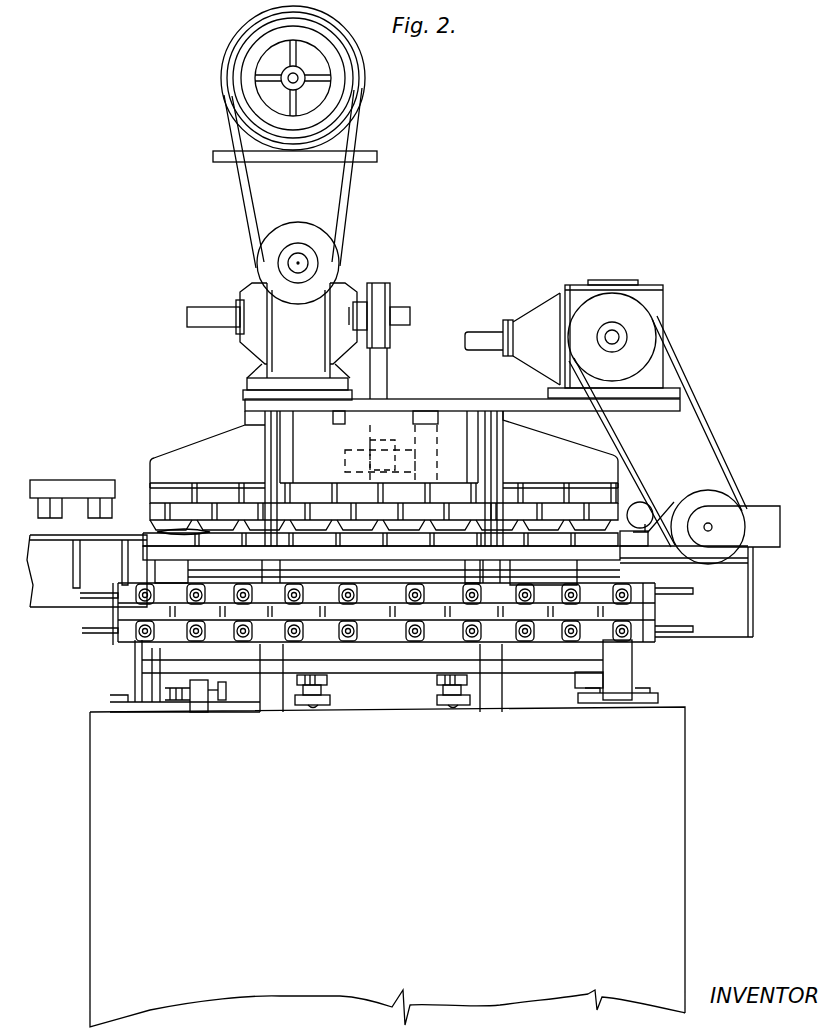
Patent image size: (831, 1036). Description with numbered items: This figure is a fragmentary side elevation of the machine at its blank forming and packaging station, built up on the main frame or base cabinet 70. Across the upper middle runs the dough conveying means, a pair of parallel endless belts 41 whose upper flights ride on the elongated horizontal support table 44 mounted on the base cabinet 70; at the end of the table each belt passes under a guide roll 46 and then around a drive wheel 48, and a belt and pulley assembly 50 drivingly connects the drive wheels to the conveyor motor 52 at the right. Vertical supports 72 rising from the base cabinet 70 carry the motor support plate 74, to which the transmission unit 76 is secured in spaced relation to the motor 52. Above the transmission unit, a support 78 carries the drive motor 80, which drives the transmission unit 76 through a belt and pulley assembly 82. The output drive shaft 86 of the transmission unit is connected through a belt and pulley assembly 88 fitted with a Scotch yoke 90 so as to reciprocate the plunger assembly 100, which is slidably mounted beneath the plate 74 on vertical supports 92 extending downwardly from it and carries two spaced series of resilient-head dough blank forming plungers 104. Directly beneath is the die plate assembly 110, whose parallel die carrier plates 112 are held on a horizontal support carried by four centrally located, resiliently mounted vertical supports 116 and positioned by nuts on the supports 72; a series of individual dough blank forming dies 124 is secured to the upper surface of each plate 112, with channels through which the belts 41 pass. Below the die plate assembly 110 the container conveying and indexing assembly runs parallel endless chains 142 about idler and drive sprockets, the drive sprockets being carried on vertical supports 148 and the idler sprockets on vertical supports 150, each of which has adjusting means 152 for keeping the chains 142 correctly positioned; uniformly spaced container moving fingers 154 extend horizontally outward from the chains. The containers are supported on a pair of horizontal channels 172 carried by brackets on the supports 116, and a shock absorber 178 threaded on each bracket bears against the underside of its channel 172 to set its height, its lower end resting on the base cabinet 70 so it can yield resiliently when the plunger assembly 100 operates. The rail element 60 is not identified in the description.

The drive motor 80 is at (356, 81).
The support 78 is at (377, 156).
The belt and pulley assembly 82 is at (348, 252).
The transmission unit 76 is at (250, 342).
The belt and pulley assembly 88 is at (392, 300).
The output drive shaft 86 is at (411, 317).
The motor support plate 74 is at (245, 406).
The Scotch yoke 90 is at (396, 449).
The vertical supports 92 is at (445, 421).
The vertical supports 72 is at (277, 458).
The plunger assembly 100 is at (518, 433).
The dough blank forming plungers 104 is at (150, 497).
The dough blank forming dies 124 is at (160, 532).
The support table 44 is at (72, 578).
The die carrier plates 112 is at (152, 556).
The die plate assembly 110 is at (627, 547).
The guide roll 46 is at (645, 503).
The endless belts 41 is at (668, 505).
The drive wheel 48 is at (737, 496).
The belt and pulley assembly 50 is at (704, 441).
The motor 52 is at (657, 305).
The guide rail 60 is at (72, 476).
The container moving fingers 154 is at (90, 603).
The vertical supports 116 is at (323, 666).
The endless chains 142 is at (645, 609).
The vertical supports 150 is at (142, 666).
The adjusting means 152 is at (202, 707).
The vertical supports 148 is at (627, 676).
The channels 172 is at (402, 665).
The shock absorber 178 is at (332, 703).
The base cabinet 70 is at (452, 844).